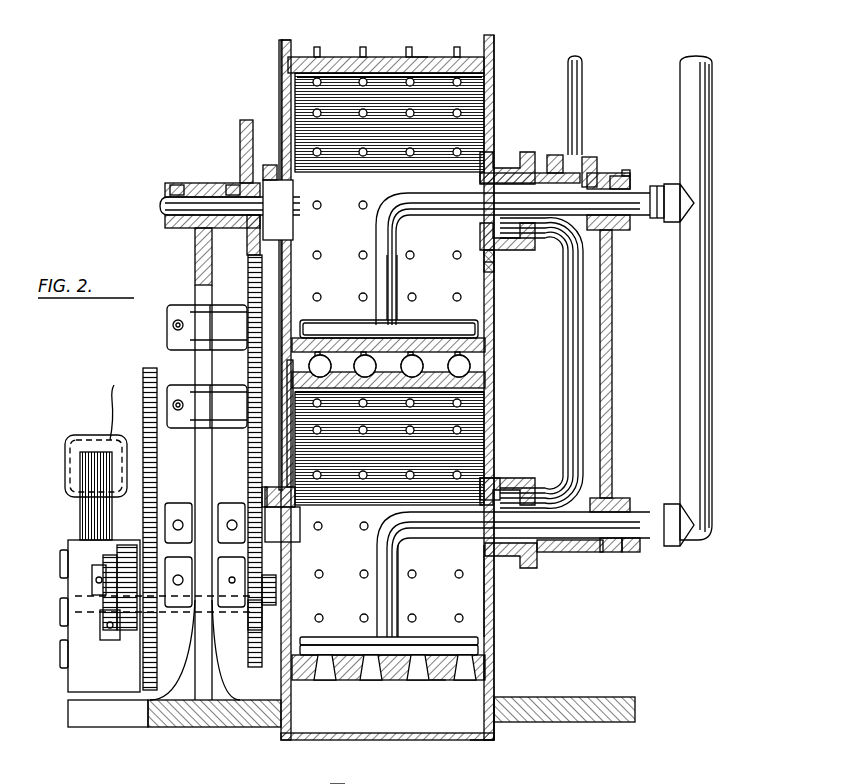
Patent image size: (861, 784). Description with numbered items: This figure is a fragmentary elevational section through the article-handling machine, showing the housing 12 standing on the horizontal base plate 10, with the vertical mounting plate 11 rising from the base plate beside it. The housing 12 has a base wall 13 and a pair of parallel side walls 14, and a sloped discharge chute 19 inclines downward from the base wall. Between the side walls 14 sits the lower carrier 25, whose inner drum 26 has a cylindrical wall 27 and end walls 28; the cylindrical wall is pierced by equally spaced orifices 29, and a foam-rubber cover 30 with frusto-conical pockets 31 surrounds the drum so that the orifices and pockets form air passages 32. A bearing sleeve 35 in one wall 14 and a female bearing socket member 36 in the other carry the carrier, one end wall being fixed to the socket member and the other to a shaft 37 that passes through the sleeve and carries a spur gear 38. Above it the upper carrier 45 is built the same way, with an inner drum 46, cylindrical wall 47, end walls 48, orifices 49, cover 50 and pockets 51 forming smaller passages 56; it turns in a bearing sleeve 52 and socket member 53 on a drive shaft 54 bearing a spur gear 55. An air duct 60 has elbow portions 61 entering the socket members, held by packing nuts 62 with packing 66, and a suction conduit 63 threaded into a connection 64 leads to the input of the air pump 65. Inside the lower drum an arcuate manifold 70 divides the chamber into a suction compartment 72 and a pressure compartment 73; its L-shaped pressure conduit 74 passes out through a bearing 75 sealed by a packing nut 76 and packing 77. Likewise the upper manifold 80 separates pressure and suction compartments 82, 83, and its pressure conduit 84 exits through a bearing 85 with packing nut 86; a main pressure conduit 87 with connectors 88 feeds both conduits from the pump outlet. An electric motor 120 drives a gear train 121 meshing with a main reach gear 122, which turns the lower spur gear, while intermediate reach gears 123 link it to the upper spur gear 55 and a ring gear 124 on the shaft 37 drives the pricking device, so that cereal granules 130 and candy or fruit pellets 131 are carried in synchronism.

The base plate 10 is at (607, 722).
The mounting plate 11 is at (195, 262).
The housing 12 is at (279, 67).
The base wall 13 is at (481, 741).
The side walls 14 is at (283, 40).
The discharge chute 19 is at (441, 740).
The lower carrier 25 is at (438, 682).
The inner drum 26 is at (496, 611).
The cylindrical wall 27 is at (376, 681).
The end walls 28 is at (486, 421).
The orifices 29 is at (360, 530).
The cover 30 is at (483, 676).
The pockets 31 is at (287, 350).
The passages 32 is at (322, 673).
The bearing sleeve 35 is at (282, 486).
The female bearing socket member 36 is at (500, 479).
The shaft 37 is at (294, 527).
The spur gear 38 is at (262, 494).
The upper carrier 45 is at (420, 54).
The inner drum 46 is at (482, 268).
The cylindrical wall 47 is at (340, 336).
The end walls 48 is at (281, 82).
The orifices 49 is at (316, 80).
The cover 50 is at (342, 57).
The pockets 51 is at (458, 48).
The bearing sleeve 52 is at (270, 165).
The female bearing socket member 53 is at (496, 155).
The drive shaft 54 is at (294, 200).
The spur gear 55 is at (246, 121).
The passages 56 is at (408, 48).
The air duct 60 is at (612, 336).
The elbow portions 61 is at (600, 172).
The packing nuts 62 is at (520, 262).
The suction conduit 63 is at (582, 90).
The connection 64 is at (590, 156).
The air pump 65 is at (339, 783).
The packing 66 is at (497, 273).
The arcuate manifold 70 is at (430, 639).
The suction compartment 72 is at (466, 591).
The pressure compartment 73 is at (355, 655).
The pressure conduit 74 is at (425, 530).
The bearing 75 is at (620, 553).
The packing nut 76 is at (641, 553).
The packing 77 is at (613, 229).
The arcuate manifold 80 is at (400, 325).
The pressure compartment 82 is at (396, 330).
The suction compartment 83 is at (470, 87).
The pressure conduit 84 is at (388, 212).
The bearing 85 is at (623, 176).
The packing nut 86 is at (641, 185).
The main pressure conduit 87 is at (700, 336).
The connectors 88 is at (668, 223).
The electric motor 120 is at (72, 436).
The gear train 121 is at (80, 621).
The main reach gear 122 is at (261, 614).
The intermediate reach gears 123 is at (250, 407).
The ring gear 124 is at (148, 370).
The cereal granules 130 is at (426, 369).
The pellets of candy or fruit 131 is at (316, 56).